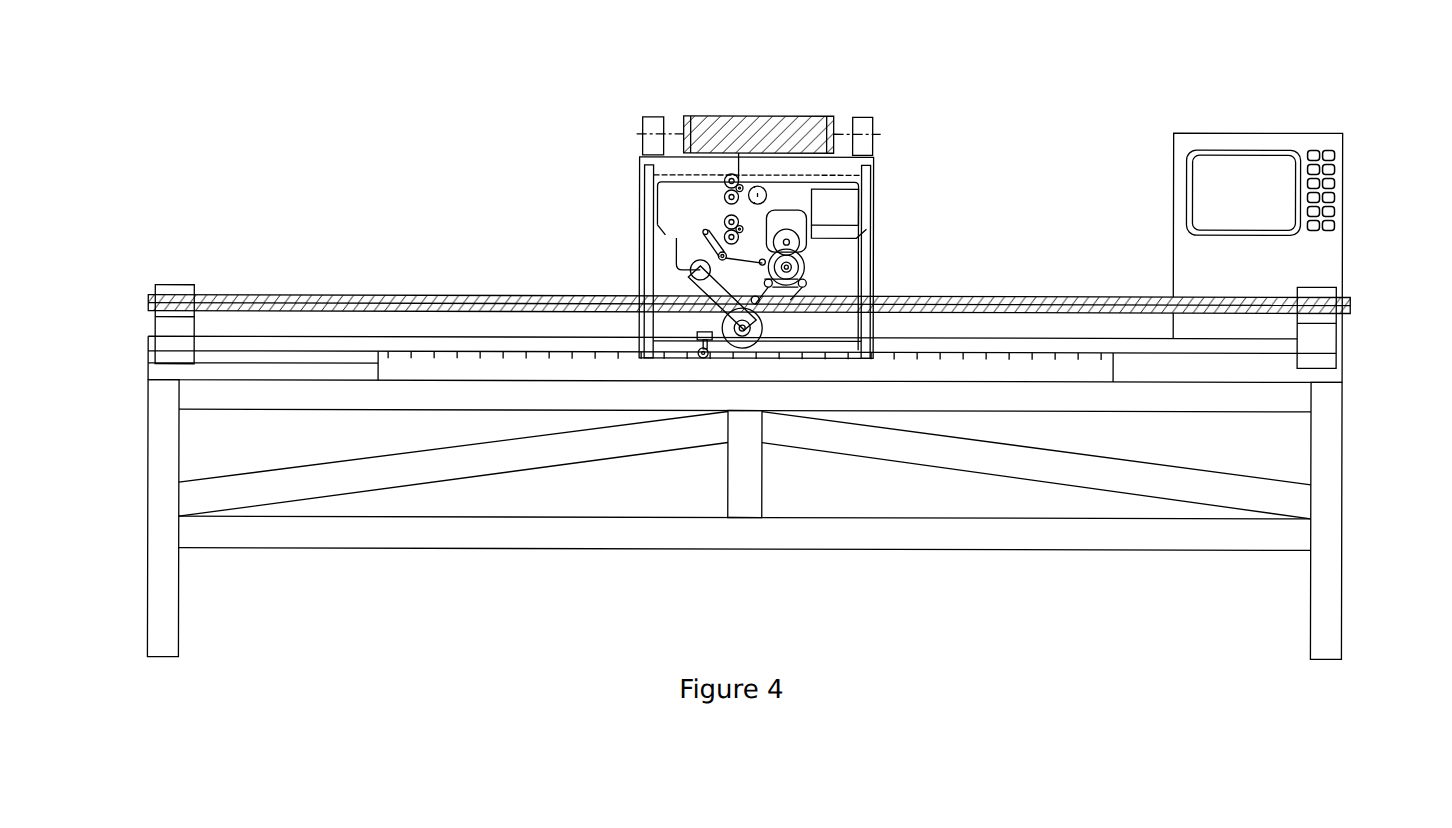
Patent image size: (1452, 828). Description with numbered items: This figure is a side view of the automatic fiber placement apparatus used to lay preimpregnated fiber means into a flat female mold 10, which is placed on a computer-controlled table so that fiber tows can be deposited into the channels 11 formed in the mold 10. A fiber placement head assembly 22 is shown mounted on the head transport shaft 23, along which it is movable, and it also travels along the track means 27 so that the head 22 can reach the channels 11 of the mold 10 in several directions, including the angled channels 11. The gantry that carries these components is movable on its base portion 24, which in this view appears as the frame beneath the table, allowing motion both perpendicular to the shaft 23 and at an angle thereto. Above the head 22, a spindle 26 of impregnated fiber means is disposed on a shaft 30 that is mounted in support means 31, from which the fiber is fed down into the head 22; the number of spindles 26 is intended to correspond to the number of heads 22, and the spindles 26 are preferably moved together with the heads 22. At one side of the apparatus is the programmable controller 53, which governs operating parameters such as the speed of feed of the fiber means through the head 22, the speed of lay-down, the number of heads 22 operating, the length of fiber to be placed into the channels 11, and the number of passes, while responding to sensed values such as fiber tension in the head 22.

The flat female mold 10 is at (950, 352).
The channels 11 is at (1008, 352).
The fiber placement head assembly 22 is at (680, 205).
The head transport shaft 23 is at (767, 194).
The base portion 24 is at (1115, 404).
The spindles 26 is at (728, 117).
The track means 27 is at (1075, 297).
The shafts 30 is at (880, 134).
The support means 31 is at (868, 122).
The controller 53 is at (1344, 215).